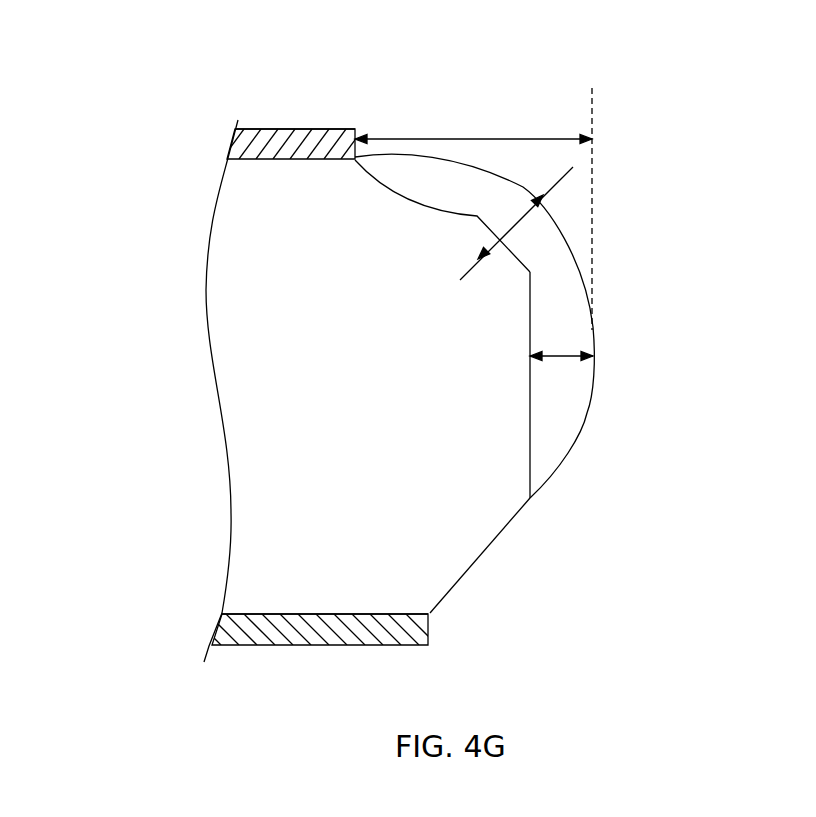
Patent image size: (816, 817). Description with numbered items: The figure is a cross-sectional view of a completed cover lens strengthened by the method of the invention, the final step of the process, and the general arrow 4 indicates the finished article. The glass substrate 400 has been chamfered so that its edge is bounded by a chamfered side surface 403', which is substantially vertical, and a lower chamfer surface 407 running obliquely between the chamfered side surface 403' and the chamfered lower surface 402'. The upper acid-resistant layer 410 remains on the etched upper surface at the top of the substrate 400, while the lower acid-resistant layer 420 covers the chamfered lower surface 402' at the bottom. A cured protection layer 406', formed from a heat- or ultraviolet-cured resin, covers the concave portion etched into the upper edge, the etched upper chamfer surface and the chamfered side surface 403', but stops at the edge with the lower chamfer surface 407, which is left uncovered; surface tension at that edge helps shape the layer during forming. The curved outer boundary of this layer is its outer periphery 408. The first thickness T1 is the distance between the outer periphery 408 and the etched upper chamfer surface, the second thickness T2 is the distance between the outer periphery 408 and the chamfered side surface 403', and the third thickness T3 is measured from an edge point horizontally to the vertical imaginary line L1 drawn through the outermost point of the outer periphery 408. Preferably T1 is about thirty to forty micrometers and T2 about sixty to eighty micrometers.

The substrate 400 is at (148, 120).
The lens element 4 is at (637, 88).
The upper acid-resistant layer 410 is at (253, 140).
The lower acid-resistant layer 420 is at (272, 646).
The chamfered lower surface 402' is at (325, 669).
The cured protection layer 406' is at (513, 240).
The outer periphery 408 is at (585, 413).
The chamfered side surface 403' is at (593, 389).
The lower chamfer surface 407 is at (478, 562).
The vertical imaginary line L1 is at (593, 192).
The first thickness T1 is at (517, 227).
The second thickness T2 is at (567, 347).
The third thickness T3 is at (473, 122).